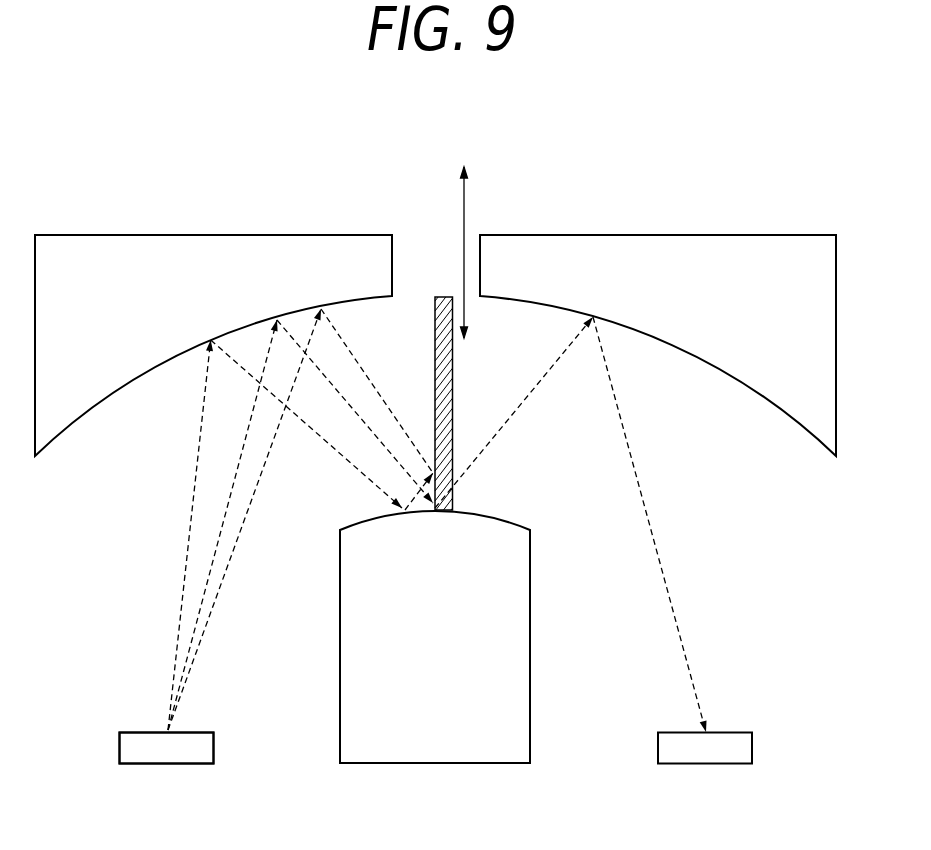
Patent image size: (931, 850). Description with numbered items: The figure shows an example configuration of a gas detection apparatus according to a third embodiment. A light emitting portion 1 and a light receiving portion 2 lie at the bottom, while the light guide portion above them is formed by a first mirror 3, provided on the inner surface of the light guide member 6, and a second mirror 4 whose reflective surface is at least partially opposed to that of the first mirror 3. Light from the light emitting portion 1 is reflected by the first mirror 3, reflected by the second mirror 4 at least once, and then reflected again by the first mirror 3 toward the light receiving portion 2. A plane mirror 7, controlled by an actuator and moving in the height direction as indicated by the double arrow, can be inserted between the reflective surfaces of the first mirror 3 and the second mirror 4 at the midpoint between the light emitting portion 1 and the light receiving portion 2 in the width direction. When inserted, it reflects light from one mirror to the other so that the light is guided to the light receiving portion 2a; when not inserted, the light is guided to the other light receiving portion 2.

The light emitting portion 1 is at (168, 763).
The light receiving portion 2 is at (703, 763).
The light receiving portion 2a is at (167, 748).
The first mirror 3 is at (128, 383).
The second mirror 4 is at (498, 638).
The light guide member 6 is at (715, 263).
The plane mirror 7 is at (443, 389).